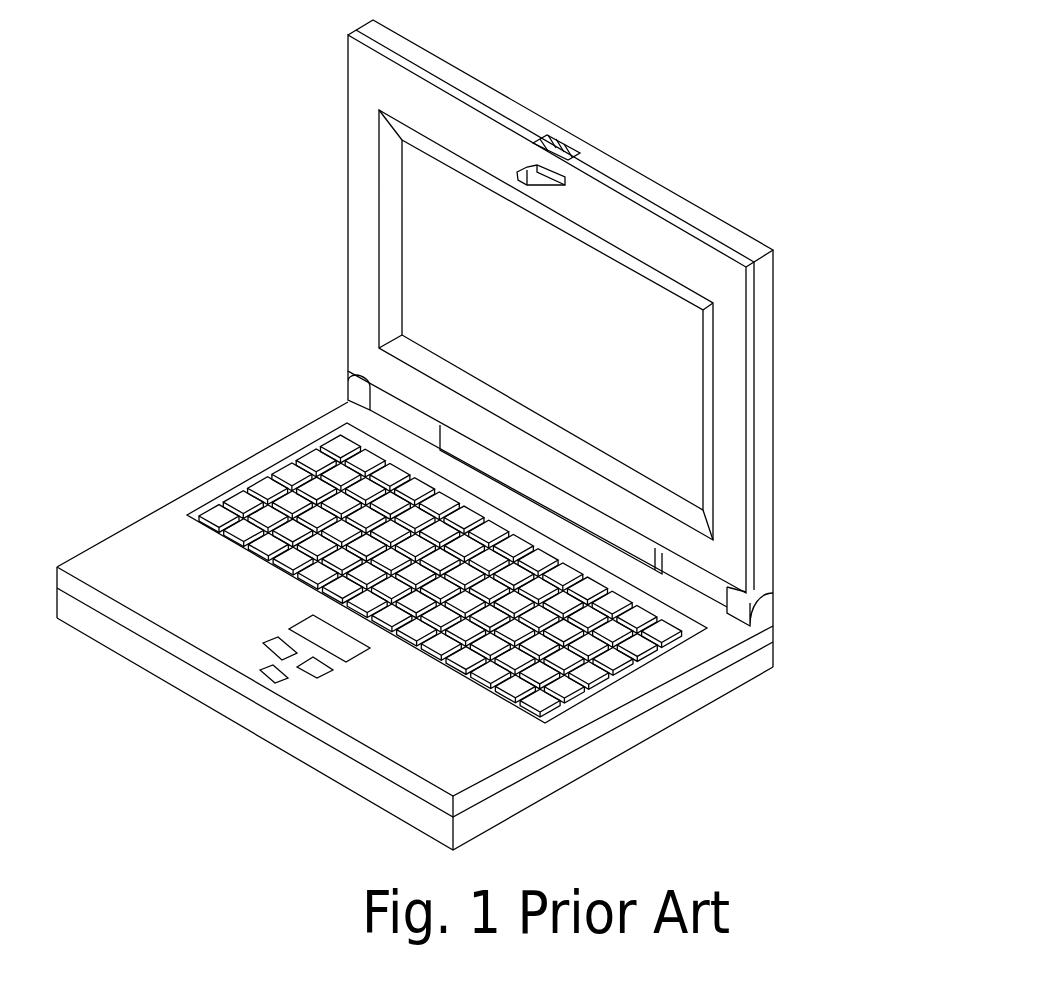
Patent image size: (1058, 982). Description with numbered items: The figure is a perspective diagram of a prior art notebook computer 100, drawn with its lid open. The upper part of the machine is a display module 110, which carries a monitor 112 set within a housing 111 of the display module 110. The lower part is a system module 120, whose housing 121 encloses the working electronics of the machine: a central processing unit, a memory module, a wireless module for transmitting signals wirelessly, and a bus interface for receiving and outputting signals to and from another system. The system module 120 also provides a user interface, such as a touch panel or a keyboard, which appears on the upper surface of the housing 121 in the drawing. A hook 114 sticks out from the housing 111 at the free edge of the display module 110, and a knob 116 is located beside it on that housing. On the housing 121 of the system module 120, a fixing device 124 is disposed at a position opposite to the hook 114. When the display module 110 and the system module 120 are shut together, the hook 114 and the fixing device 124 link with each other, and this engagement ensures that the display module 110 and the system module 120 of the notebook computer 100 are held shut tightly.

The notebook computer 100 is at (795, 622).
The display module 110 is at (742, 205).
The housing of the display module 111 is at (623, 161).
The monitor 112 is at (412, 213).
The hook 114 is at (520, 168).
The knob 116 is at (567, 135).
The system module 120 is at (198, 448).
The housing of the system module 121 is at (700, 710).
The fixing device 124 is at (270, 672).